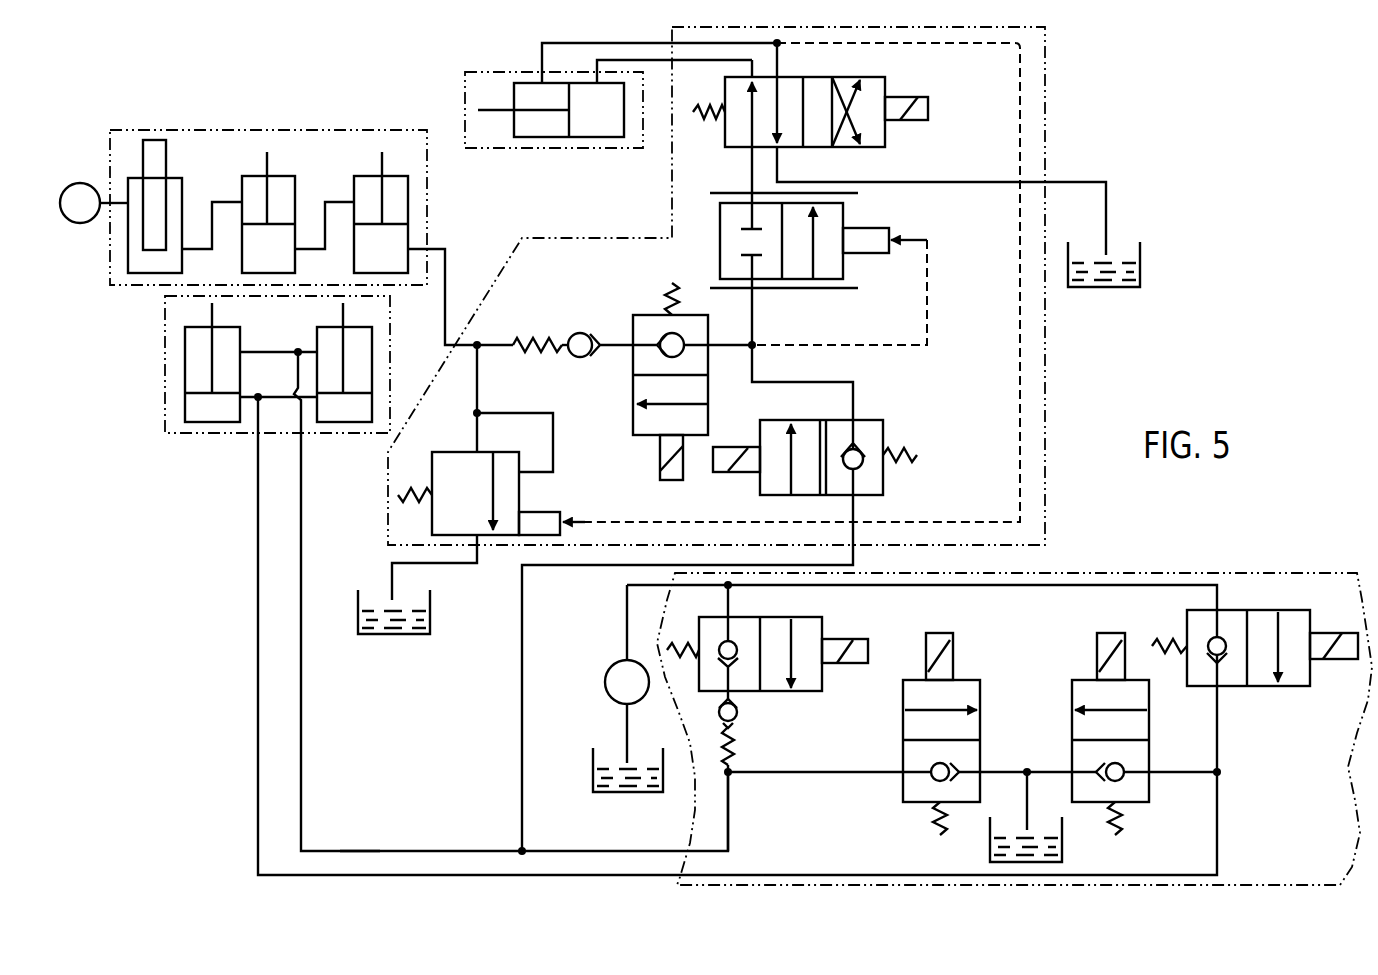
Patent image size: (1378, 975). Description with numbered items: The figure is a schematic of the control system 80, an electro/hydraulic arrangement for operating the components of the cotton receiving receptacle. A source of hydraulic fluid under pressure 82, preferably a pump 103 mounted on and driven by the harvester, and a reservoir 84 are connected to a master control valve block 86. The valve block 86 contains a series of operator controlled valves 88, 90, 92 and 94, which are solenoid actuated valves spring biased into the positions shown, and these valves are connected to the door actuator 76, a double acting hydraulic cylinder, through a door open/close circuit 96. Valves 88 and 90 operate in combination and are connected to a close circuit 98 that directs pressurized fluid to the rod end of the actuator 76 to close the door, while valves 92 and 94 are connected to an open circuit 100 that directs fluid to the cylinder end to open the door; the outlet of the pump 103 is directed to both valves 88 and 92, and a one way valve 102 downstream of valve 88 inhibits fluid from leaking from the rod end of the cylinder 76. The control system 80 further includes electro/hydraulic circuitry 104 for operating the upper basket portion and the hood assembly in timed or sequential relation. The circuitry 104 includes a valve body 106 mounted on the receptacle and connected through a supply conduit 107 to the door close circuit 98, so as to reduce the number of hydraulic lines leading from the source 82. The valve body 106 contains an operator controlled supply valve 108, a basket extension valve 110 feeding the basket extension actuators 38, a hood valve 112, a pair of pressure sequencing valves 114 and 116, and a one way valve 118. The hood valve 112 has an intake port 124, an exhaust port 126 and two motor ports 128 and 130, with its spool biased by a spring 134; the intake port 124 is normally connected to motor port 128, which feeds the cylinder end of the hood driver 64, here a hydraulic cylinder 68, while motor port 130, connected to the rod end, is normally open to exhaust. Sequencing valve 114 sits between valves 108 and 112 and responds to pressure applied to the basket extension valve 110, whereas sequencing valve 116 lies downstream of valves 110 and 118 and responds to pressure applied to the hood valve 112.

The basket extension actuators 38 is at (355, 128).
The door actuator 76 is at (163, 357).
The driver 64 is at (517, 154).
The hydraulic cylinder 68 is at (588, 137).
The control system 80 is at (1143, 342).
The source of hydraulic fluid under pressure 82 is at (606, 693).
The reservoir 84 is at (597, 760).
The master control valve block 86 is at (1170, 564).
The operator controlled valve 88 is at (829, 620).
The operator controlled valve 90 is at (1065, 698).
The operator controlled valve 92 is at (1271, 606).
The operator controlled valve 94 is at (969, 673).
The door open/close circuit 96 is at (358, 840).
The close circuit 98 is at (302, 540).
The open circuit 100 is at (258, 523).
The one way valve 102 is at (756, 721).
The pump 103 is at (613, 665).
The electro/hydraulic circuitry 104 is at (1048, 135).
The valve body 106 is at (1046, 378).
The supply conduit 107 is at (521, 745).
The supply valve 108 is at (878, 416).
The basket extension valve 110 is at (643, 312).
The hood valve 112 is at (884, 71).
The pressure sequencing valve 114 is at (717, 244).
The pressure sequencing valve 116 is at (531, 495).
The one way valve 118 is at (557, 330).
The intake port 124 is at (750, 150).
The exhaust port 126 is at (779, 150).
The motor port 128 is at (748, 78).
The motor port 130 is at (780, 68).
The spring 134 is at (712, 118).